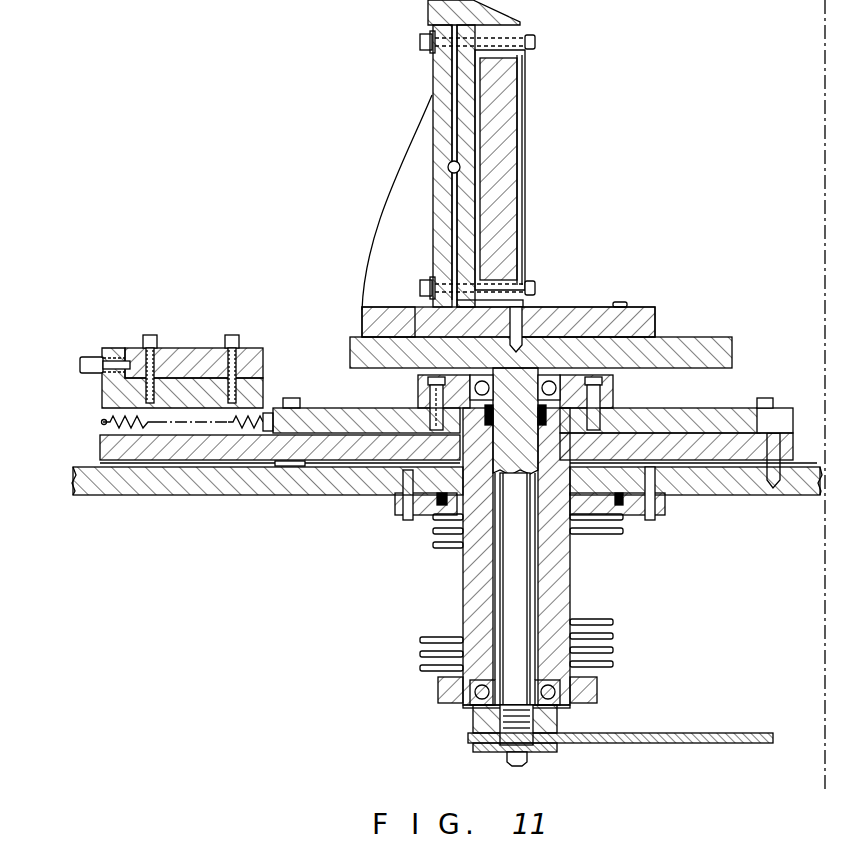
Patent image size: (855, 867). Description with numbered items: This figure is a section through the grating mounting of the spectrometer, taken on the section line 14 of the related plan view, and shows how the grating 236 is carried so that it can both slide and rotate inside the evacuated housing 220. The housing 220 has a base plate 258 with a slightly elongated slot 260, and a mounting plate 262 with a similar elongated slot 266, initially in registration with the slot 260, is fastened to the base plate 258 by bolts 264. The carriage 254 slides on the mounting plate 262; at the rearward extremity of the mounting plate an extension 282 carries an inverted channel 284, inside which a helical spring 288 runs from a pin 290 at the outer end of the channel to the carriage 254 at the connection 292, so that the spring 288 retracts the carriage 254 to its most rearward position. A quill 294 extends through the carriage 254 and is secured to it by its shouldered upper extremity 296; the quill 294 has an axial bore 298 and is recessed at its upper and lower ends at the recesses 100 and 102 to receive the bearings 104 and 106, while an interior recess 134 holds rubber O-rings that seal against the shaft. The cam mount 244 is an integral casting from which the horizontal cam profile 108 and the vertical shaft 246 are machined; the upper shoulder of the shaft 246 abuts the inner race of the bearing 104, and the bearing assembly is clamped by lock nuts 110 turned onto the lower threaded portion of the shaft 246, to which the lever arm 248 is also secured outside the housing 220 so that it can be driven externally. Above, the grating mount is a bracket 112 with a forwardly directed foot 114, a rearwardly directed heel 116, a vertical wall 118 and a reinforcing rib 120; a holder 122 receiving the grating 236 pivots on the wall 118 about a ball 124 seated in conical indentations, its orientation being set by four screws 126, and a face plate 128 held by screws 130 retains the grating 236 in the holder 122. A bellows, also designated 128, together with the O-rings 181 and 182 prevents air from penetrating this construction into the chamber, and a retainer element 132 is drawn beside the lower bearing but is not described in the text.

The section line 14 is at (825, 790).
The shaft 100 is at (531, 421).
The bearing 102 is at (554, 540).
The hub block 104 is at (578, 375).
The bearing 106 is at (482, 540).
The base block 108 is at (360, 340).
The nut 110 is at (560, 724).
The column 112 is at (432, 97).
The block portion 114 is at (570, 318).
The block portion 116 is at (387, 312).
The column wall 118 is at (445, 150).
The curved surface 120 is at (372, 233).
The inner wall 122 is at (460, 208).
The ball detent 124 is at (460, 167).
The bolt 126 is at (420, 42).
The cooling fin / bracket 128 is at (525, 75).
The nut 130 is at (532, 45).
The bearing retainer 132 is at (470, 695).
The housing wall 134 is at (475, 556).
The fin 181 is at (428, 520).
The block 182 is at (438, 686).
The base plate 220 is at (186, 497).
The pad 236 is at (500, 222).
The plate 244 is at (660, 348).
The inner shaft 246 is at (537, 620).
The bottom plate 248 is at (605, 742).
The plate 254 is at (722, 410).
The plate 258 is at (305, 485).
The bolt 260 is at (640, 510).
The groove 262 is at (710, 455).
The screw 264 is at (295, 404).
The plate 266 is at (620, 418).
The plate 282 is at (100, 440).
The block 284 is at (103, 378).
The pin 288 is at (140, 430).
The spring 290 is at (104, 422).
The block 292 is at (320, 403).
The cylinder 294 is at (466, 558).
The bolt 296 is at (425, 386).
The housing 298 is at (493, 605).